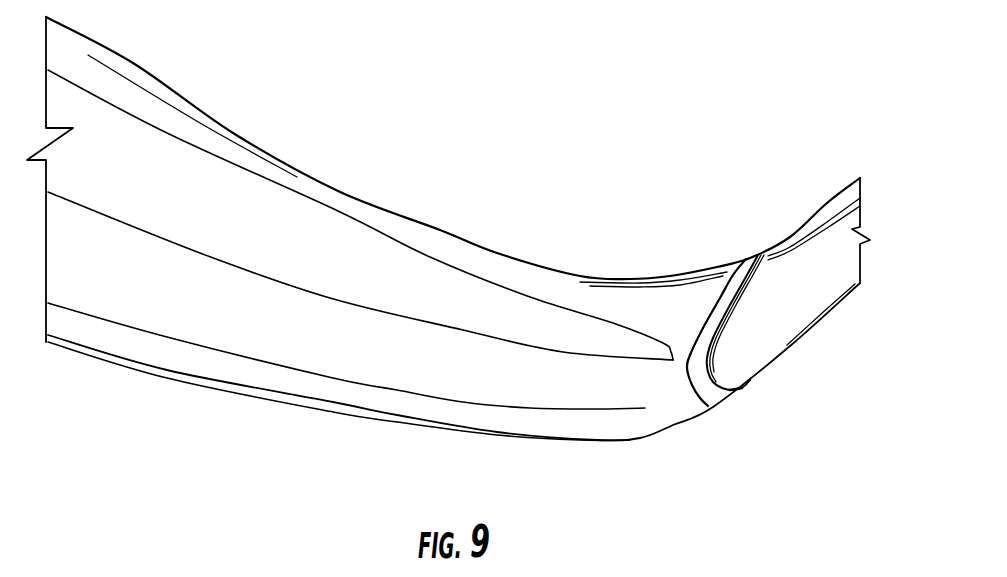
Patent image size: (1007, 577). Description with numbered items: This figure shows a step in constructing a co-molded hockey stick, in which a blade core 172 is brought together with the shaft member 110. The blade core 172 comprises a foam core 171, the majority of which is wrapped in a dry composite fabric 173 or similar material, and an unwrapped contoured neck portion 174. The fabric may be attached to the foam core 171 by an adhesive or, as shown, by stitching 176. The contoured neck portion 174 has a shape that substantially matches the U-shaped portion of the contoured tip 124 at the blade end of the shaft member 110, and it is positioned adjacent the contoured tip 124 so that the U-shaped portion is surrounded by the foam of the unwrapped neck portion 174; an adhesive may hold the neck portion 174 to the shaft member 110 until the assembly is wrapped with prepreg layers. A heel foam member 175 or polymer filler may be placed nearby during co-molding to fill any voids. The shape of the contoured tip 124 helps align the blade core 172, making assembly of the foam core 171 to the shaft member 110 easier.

The shaft member 110 is at (798, 302).
The contoured tip 124 is at (710, 355).
The foam core 171 is at (740, 267).
The blade core 172 is at (353, 353).
The dry composite fabric 173 is at (383, 265).
The contoured neck portion 174 is at (705, 318).
The heel foam member 175 is at (740, 388).
The stitching 176 is at (518, 405).